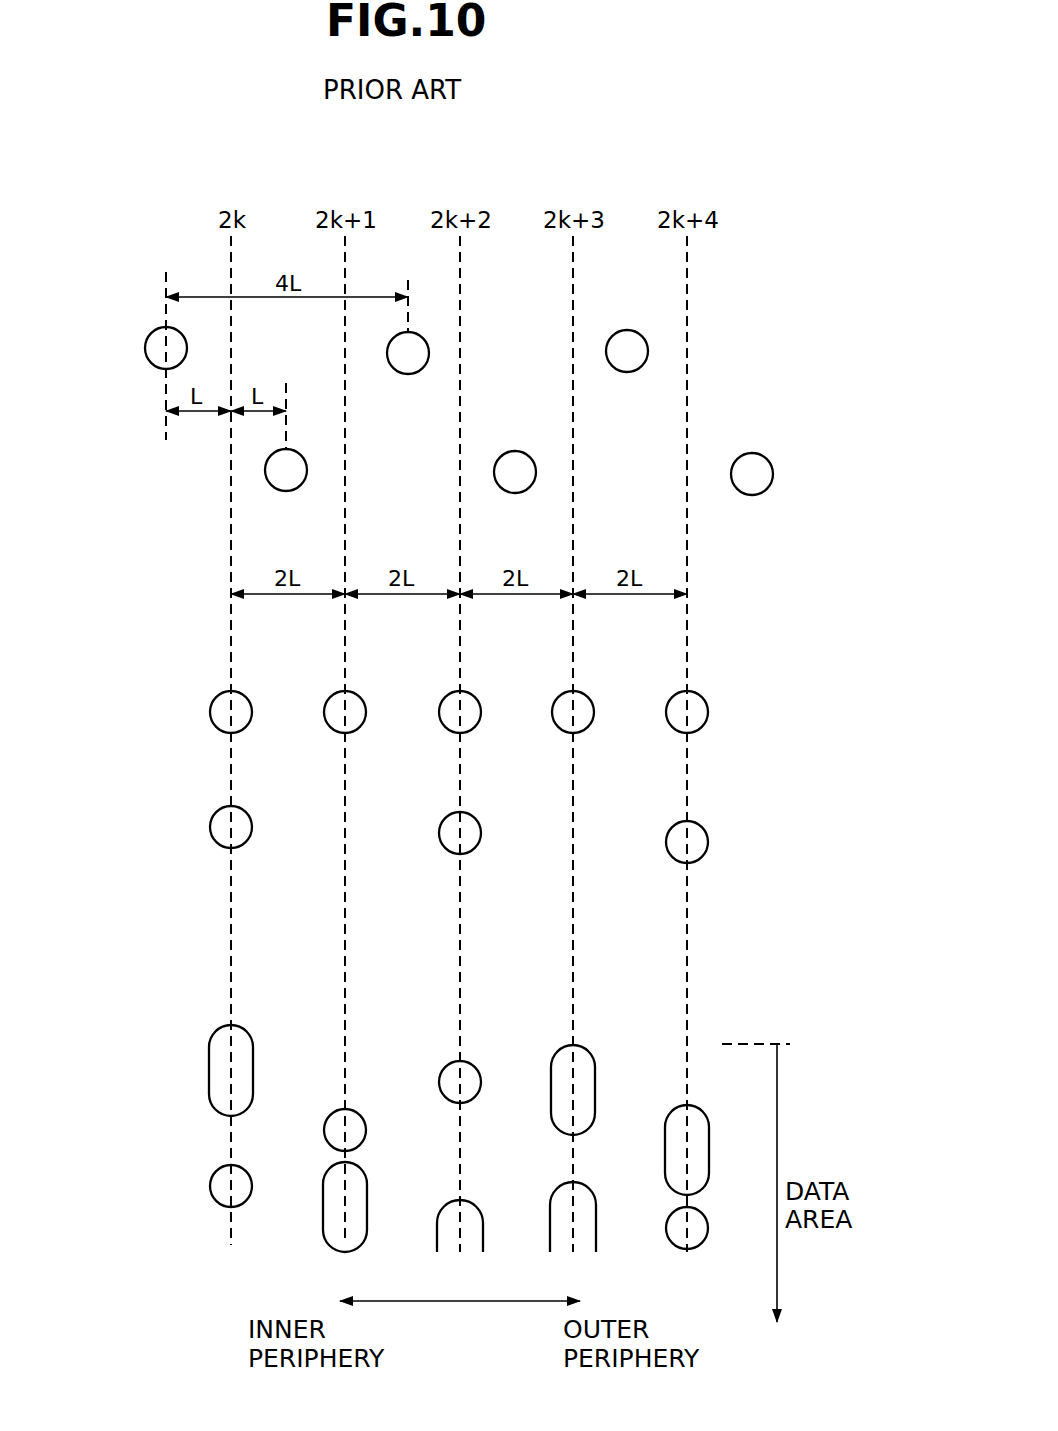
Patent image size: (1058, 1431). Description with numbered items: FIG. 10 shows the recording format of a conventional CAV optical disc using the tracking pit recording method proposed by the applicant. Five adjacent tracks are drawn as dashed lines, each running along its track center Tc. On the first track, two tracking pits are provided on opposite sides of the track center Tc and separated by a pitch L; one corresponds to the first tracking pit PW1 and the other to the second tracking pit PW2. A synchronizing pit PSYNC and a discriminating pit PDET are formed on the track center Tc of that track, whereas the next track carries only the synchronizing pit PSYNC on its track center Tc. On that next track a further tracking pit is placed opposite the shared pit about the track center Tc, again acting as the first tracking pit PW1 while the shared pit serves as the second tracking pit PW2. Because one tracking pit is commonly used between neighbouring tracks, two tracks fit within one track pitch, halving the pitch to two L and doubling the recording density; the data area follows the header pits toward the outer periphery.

The first tracking pit PW1 is at (649, 344).
The second tracking pit PW2 is at (774, 474).
The track center Tc is at (229, 633).
The synchronizing pit PSYNC is at (208, 708).
The discriminating pit PDET is at (208, 823).